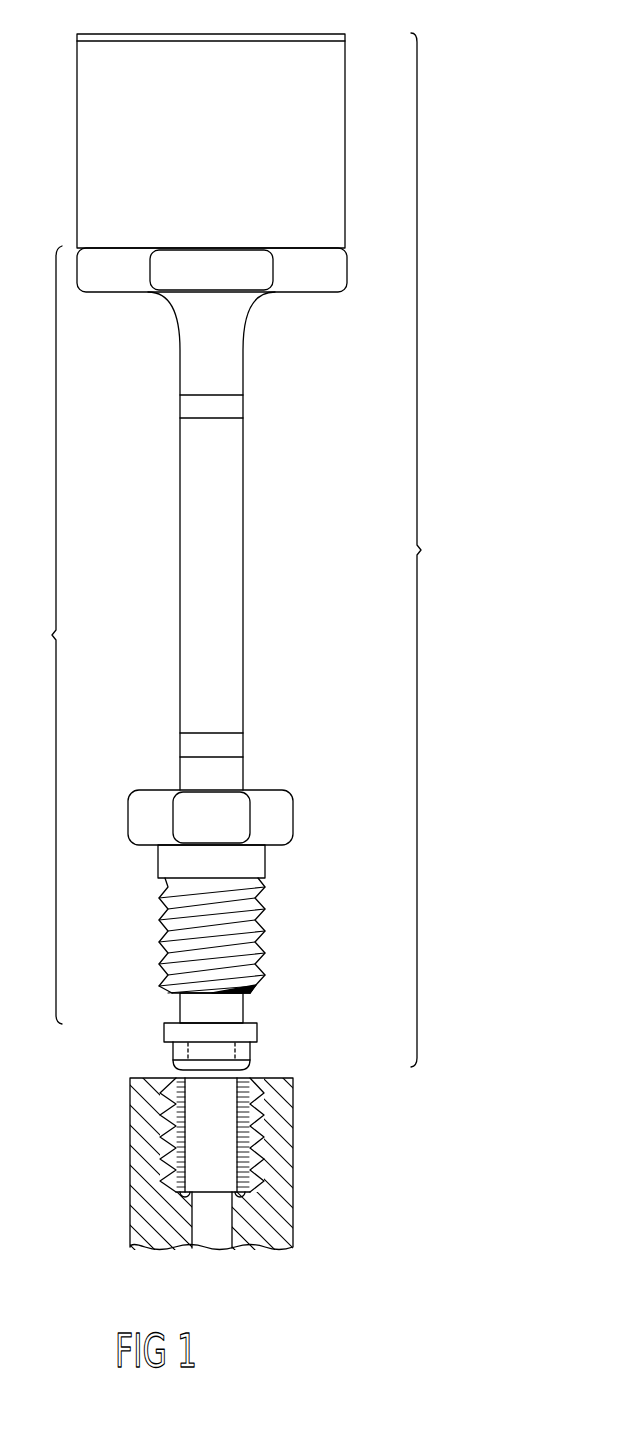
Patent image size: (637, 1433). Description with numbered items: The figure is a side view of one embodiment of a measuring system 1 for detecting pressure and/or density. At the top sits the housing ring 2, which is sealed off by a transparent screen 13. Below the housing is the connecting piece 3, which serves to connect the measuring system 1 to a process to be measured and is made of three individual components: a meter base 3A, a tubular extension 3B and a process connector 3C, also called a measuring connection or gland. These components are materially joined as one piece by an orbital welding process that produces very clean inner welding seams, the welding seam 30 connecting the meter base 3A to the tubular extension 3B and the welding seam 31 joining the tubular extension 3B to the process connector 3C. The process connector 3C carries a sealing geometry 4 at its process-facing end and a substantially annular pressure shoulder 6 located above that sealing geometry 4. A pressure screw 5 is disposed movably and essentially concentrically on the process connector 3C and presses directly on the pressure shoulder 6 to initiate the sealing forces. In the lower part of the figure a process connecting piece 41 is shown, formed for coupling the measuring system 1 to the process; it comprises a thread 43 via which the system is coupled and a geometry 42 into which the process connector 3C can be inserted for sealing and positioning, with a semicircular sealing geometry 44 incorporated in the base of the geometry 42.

The measuring system 1 is at (426, 550).
The housing ring 2 is at (337, 161).
The transparent screen 13 is at (307, 34).
The connecting piece 3 is at (46, 635).
The meter base 3A is at (337, 276).
The tubular extension 3B is at (235, 512).
The process connector 3C is at (233, 1011).
The welding seam 30 is at (237, 409).
The welding seam 31 is at (235, 748).
The pressure screw 5 is at (285, 822).
The pressure shoulder 6 is at (166, 1026).
The sealing geometry 4 is at (227, 1167).
The process connecting piece 41 is at (282, 1197).
The geometry 42 is at (165, 1193).
The thread 43 is at (175, 1085).
The semicircular sealing geometry 44 is at (242, 1198).